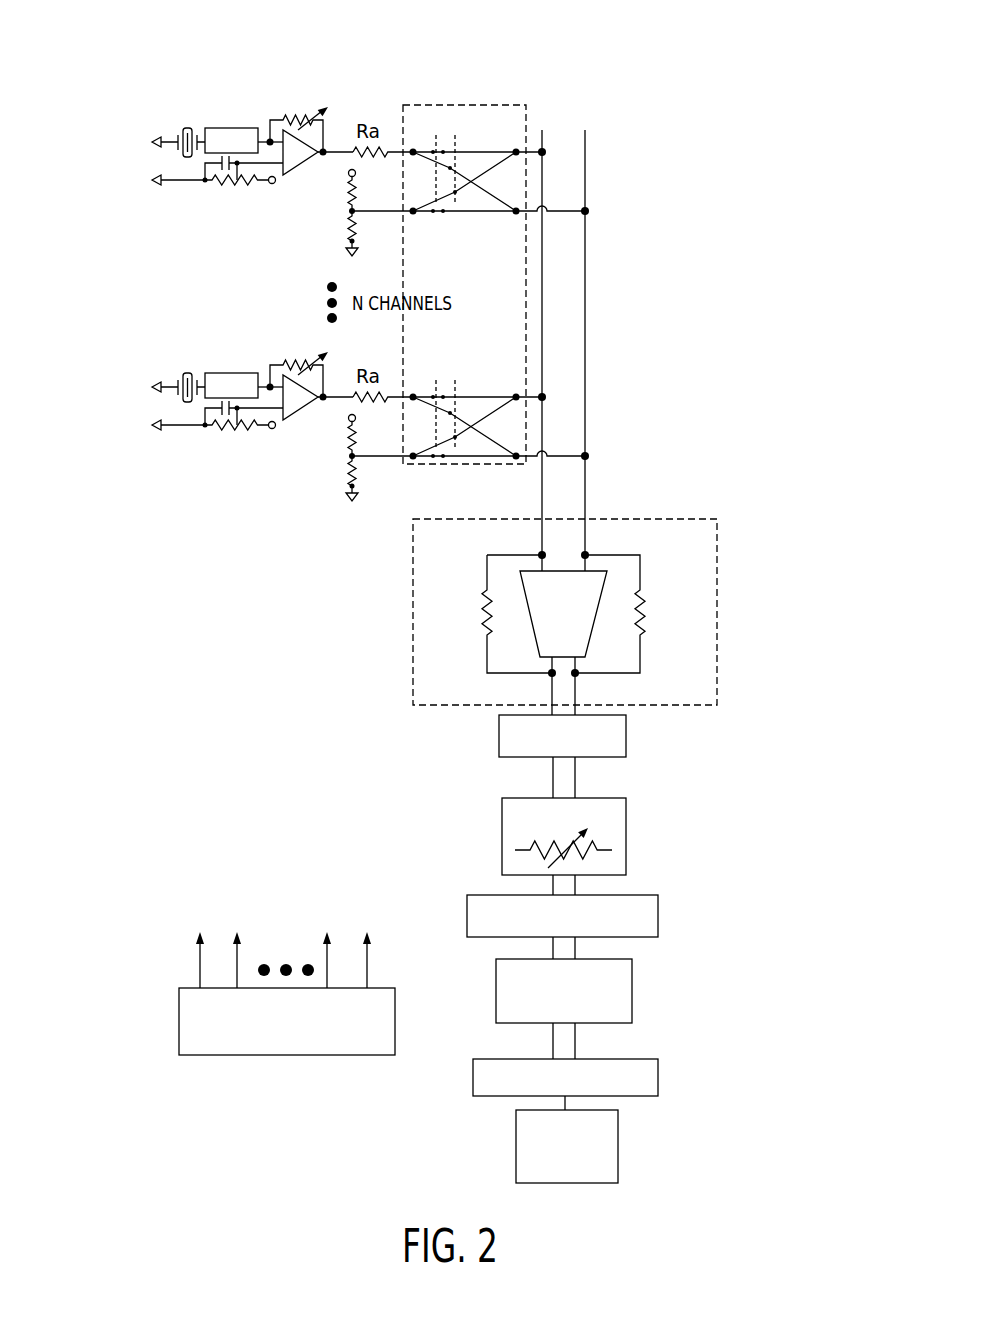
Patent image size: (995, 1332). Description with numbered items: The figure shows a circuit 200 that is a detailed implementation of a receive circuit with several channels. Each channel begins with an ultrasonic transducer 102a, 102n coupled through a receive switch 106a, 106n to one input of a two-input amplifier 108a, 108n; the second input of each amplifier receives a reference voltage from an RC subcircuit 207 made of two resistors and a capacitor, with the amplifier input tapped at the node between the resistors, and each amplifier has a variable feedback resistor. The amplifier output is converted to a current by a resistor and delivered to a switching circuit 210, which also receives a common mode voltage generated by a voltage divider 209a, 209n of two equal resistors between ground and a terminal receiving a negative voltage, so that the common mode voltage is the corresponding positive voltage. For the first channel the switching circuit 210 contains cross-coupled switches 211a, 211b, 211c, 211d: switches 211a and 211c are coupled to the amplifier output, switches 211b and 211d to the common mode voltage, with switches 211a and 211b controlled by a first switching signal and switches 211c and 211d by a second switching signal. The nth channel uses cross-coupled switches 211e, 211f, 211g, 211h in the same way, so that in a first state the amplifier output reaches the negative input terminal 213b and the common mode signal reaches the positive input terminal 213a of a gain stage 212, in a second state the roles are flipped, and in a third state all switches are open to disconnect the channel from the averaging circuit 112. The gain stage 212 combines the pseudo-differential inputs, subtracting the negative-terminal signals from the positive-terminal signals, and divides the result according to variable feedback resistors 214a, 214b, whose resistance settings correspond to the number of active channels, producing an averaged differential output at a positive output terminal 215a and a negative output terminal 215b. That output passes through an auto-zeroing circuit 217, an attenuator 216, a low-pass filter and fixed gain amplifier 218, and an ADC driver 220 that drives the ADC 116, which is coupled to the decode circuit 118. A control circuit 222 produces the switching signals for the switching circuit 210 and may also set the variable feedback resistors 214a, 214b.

The circuit 200 is at (100, 65).
The ultrasonic transducer 102a is at (185, 130).
The ultrasonic transducer 102n is at (185, 375).
The receive switch 106a is at (240, 128).
The receive switch 106n is at (240, 373).
The amplifier 108a is at (303, 163).
The amplifier 108n is at (303, 408).
The RC subcircuit 207 is at (218, 191).
The voltage divider 209a is at (325, 239).
The voltage divider 209n is at (325, 484).
The switching circuit 210 is at (531, 125).
The cross-coupled switch 211a is at (433, 152).
The cross-coupled switch 211b is at (433, 217).
The cross-coupled switch 211c is at (457, 165).
The cross-coupled switch 211d is at (458, 195).
The cross-coupled switch 211e is at (433, 397).
The cross-coupled switch 211f is at (441, 452).
The cross-coupled switch 211g is at (458, 408).
The cross-coupled switch 211h is at (458, 440).
The averaging circuit 112 is at (721, 573).
The gain stage 212 is at (617, 576).
The positive input terminal 213a is at (585, 555).
The negative input terminal 213b is at (542, 555).
The variable feedback resistor 214a is at (658, 595).
The variable feedback resistor 214b is at (506, 597).
The positive output terminal 215a is at (552, 673).
The negative output terminal 215b is at (575, 673).
The auto-zeroing circuit 217 is at (626, 737).
The attenuator 216 is at (626, 843).
The low-pass filter and fixed gain amplifier 218 is at (658, 913).
The ADC driver 220 is at (632, 990).
The ADC 116 is at (658, 1078).
The decode circuit 118 is at (618, 1148).
The control circuit 222 is at (285, 1055).